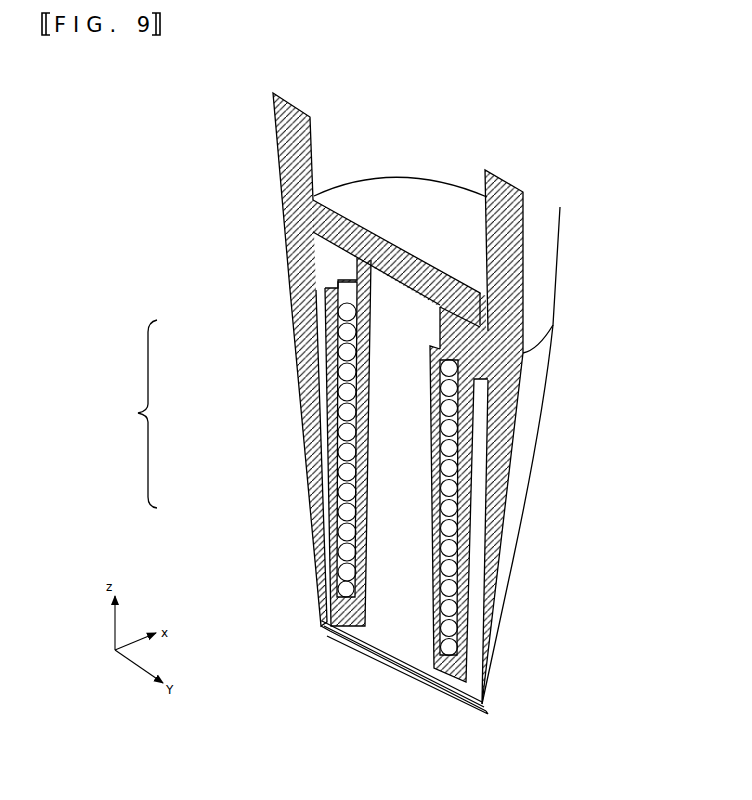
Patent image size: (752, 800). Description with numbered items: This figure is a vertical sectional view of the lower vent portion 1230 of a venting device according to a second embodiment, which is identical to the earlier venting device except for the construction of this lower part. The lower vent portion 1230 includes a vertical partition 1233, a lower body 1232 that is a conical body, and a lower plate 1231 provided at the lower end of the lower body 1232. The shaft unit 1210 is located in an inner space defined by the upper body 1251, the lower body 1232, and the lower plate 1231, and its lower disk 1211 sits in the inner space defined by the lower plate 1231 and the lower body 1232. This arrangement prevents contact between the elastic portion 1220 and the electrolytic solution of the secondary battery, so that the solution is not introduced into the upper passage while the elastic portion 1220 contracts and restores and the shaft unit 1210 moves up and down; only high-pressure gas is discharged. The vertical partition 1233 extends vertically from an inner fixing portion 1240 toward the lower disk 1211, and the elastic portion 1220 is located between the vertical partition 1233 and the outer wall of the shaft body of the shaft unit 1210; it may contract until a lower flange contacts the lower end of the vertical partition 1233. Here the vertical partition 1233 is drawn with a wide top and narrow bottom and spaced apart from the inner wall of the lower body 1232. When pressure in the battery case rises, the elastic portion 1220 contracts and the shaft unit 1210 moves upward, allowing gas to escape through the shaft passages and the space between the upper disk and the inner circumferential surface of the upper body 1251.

The shaft unit 1210 is at (422, 243).
The lower disk 1211 is at (425, 658).
The elastic portion 1220 is at (452, 557).
The lower vent portion 1230 is at (114, 414).
The lower plate 1231 is at (363, 652).
The lower body 1232 is at (317, 466).
The vertical partition 1233 is at (327, 398).
The inner fixing portion 1240 is at (360, 258).
The upper body 1251 is at (307, 150).